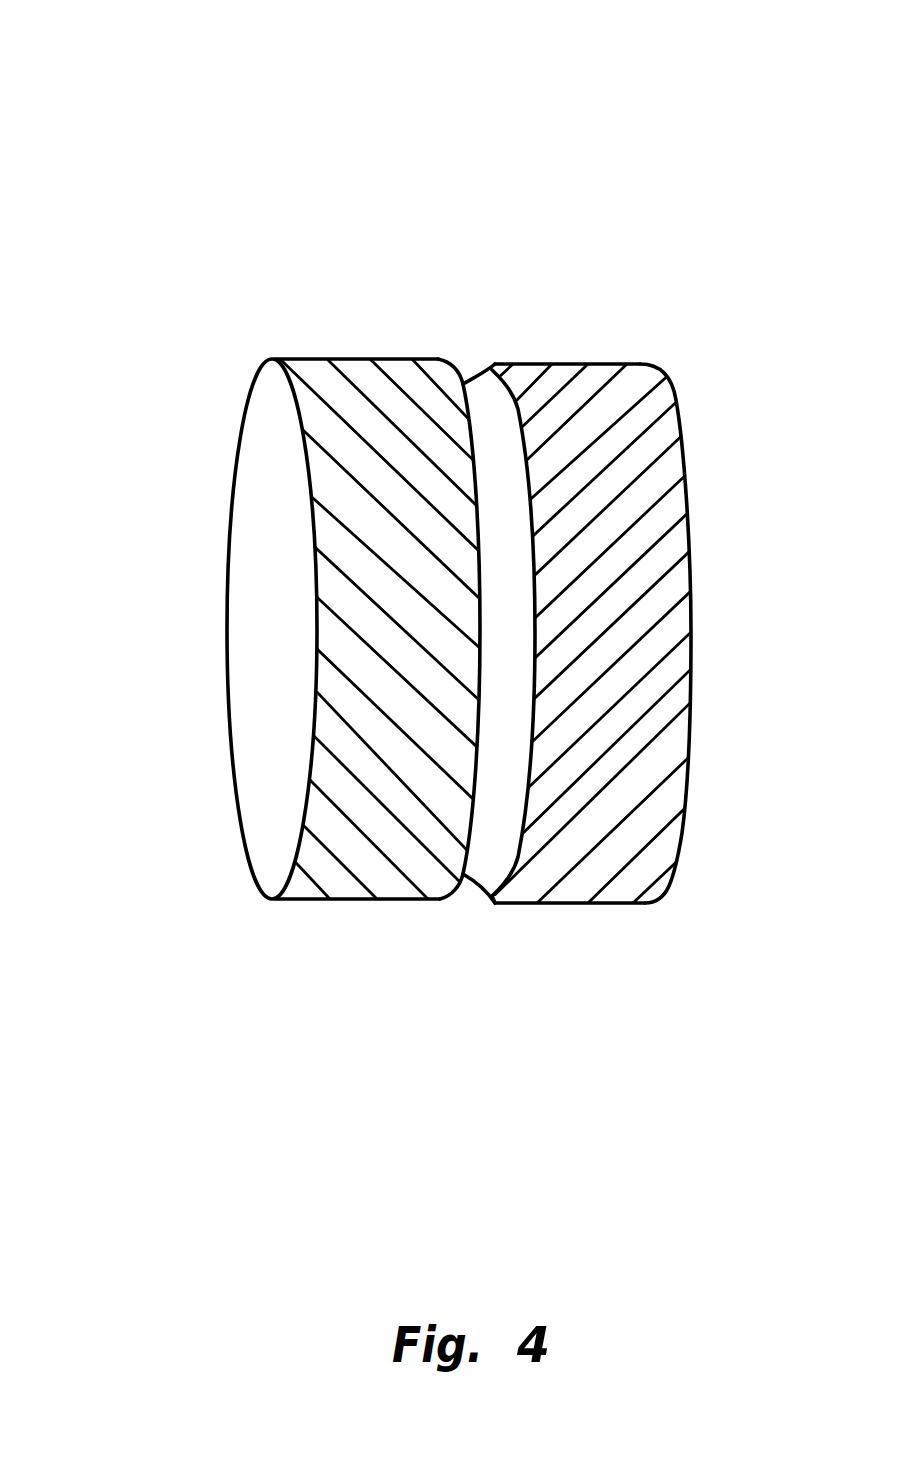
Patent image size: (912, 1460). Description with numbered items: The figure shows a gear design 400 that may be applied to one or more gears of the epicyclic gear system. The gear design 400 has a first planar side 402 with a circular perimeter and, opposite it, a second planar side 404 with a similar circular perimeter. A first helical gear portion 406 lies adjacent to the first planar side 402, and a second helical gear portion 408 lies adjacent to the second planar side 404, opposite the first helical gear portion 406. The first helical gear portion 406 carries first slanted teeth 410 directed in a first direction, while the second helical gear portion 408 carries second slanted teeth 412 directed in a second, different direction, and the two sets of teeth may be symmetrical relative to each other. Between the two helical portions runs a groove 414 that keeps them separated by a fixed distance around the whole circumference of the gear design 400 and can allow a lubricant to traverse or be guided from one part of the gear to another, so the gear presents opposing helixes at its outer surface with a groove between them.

The gear design 400 is at (140, 62).
The first planar side 402 is at (250, 635).
The second planar side 404 is at (693, 630).
The first helical gear portion 406 is at (347, 357).
The second helical gear portion 408 is at (598, 362).
The first slanted teeth 410 is at (353, 777).
The second slanted teeth 412 is at (650, 790).
The groove 414 is at (493, 425).